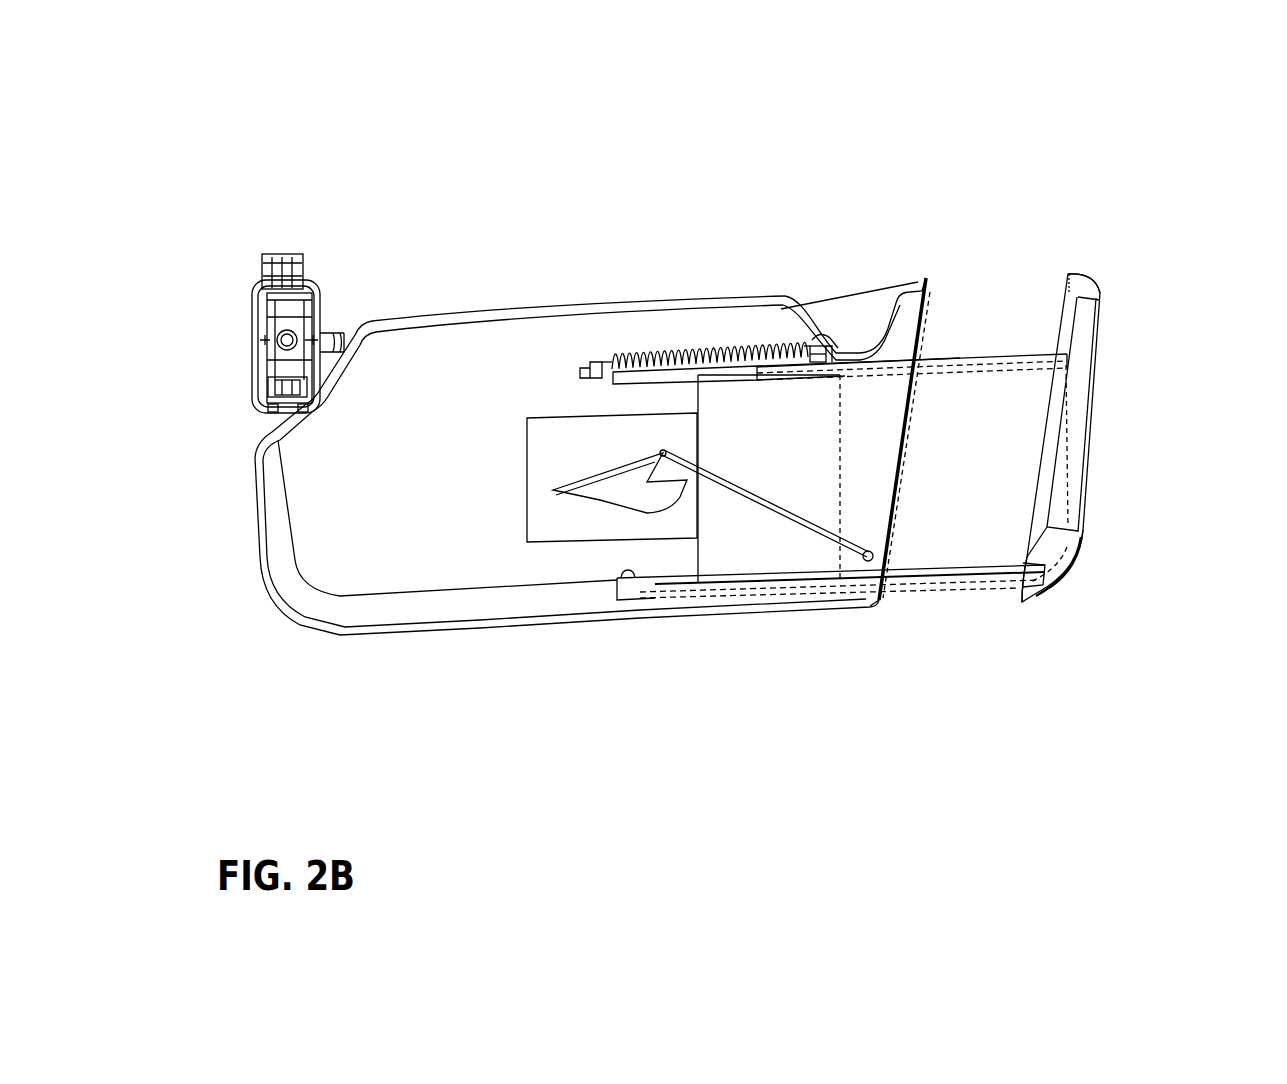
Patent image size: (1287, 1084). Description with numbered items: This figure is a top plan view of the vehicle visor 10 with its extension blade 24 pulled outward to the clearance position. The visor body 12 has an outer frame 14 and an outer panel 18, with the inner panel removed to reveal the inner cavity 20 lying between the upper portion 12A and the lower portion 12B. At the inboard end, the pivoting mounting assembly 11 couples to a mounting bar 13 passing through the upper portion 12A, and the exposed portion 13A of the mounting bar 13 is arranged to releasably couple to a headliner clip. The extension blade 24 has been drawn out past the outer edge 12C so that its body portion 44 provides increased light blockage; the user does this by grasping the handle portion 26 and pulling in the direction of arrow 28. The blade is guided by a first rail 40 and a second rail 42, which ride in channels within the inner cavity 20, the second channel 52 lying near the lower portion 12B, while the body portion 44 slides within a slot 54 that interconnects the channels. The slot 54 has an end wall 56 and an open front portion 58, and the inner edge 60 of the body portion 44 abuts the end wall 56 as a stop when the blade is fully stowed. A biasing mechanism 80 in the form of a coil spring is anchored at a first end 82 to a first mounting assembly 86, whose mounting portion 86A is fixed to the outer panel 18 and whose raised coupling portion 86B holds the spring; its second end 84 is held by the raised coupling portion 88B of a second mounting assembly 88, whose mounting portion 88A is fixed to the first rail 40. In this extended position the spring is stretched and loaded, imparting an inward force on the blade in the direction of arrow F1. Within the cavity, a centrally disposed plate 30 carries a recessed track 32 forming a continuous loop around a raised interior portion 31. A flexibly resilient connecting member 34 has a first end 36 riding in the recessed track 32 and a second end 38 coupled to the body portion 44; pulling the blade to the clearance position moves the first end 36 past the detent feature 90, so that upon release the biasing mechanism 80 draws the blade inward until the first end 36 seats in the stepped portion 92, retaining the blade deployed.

The vehicle visor 10 is at (1025, 192).
The pivoting mounting assembly 11 is at (322, 262).
The visor body 12 is at (250, 534).
The upper portion 12A is at (418, 314).
The lower portion 12B is at (427, 638).
The outer edge 12C is at (930, 298).
The mounting bar 13 is at (327, 341).
The exposed portion 13A is at (827, 350).
The outer frame 14 is at (308, 598).
The outer panel 18 is at (425, 482).
The inner cavity 20 is at (342, 518).
The extension blade 24 is at (1092, 578).
The handle portion 26 is at (1088, 338).
The arrow 28 is at (1112, 452).
The plate 30 is at (517, 523).
The raised interior portion 31 is at (608, 488).
The recessed track 32 is at (583, 463).
The connecting member 34 is at (812, 540).
The first end 36 is at (725, 572).
The second end 38 is at (868, 562).
The first rail 40 is at (1015, 355).
The second rail 42 is at (933, 583).
The body portion 44 is at (975, 525).
The second channel 52 is at (626, 574).
The slot 54 is at (772, 546).
The end wall 56 is at (700, 560).
The open front portion 58 is at (898, 560).
The inner edge 60 is at (878, 585).
The biasing mechanism 80 is at (695, 343).
The first end 82 is at (616, 368).
The second end 84 is at (808, 350).
The first mounting assembly 86 is at (572, 374).
The mounting portion 86A is at (597, 370).
The raised coupling portion 86B is at (612, 358).
The second mounting assembly 88 is at (834, 342).
The mounting portion 88A is at (866, 358).
The raised coupling portion 88B is at (836, 345).
The detent feature 90 is at (660, 452).
The stepped portion 92 is at (664, 514).
The arrow F1 is at (605, 187).